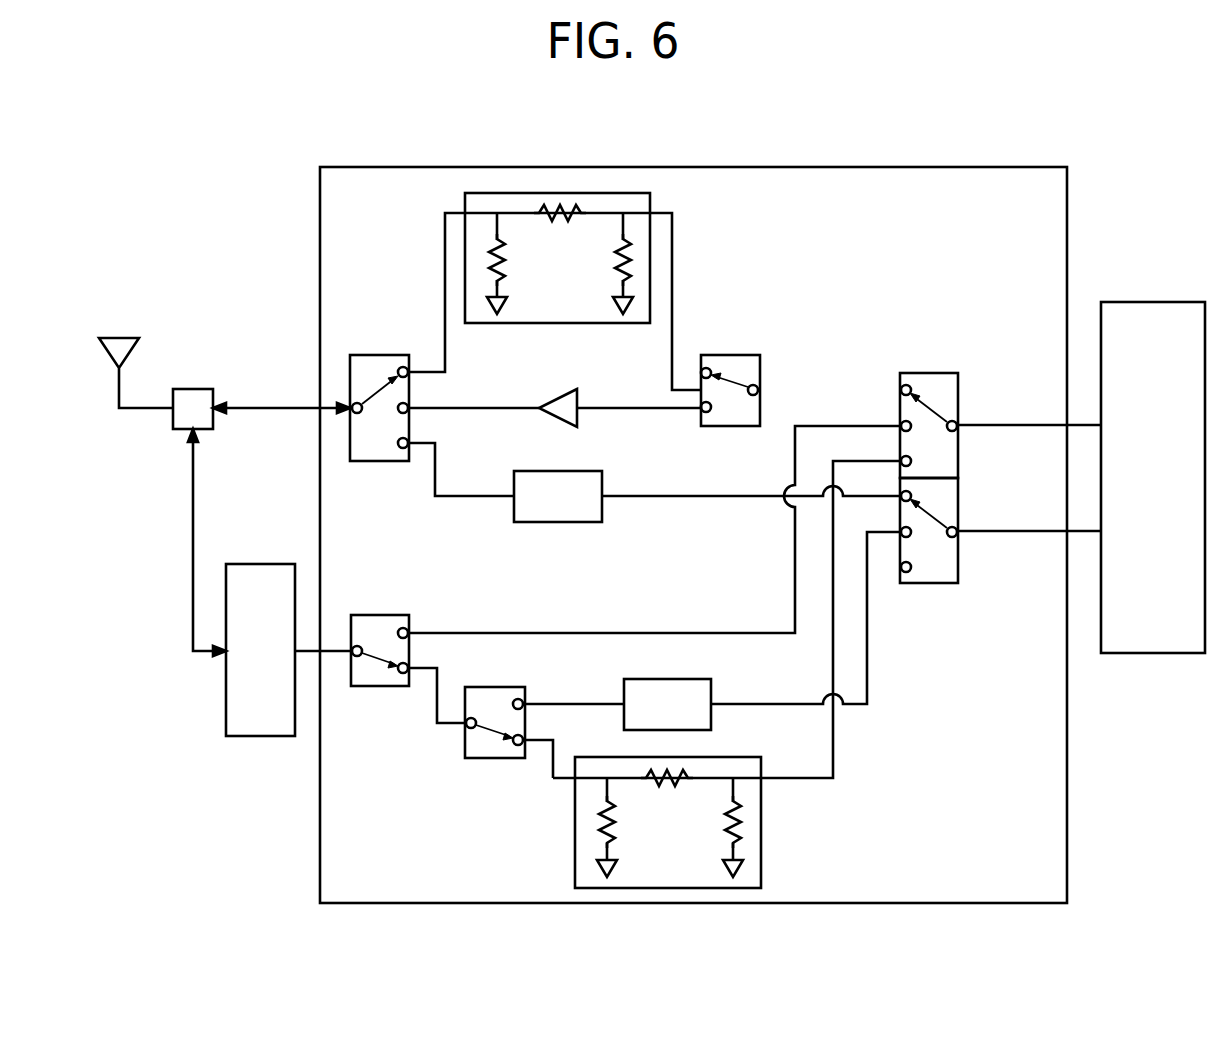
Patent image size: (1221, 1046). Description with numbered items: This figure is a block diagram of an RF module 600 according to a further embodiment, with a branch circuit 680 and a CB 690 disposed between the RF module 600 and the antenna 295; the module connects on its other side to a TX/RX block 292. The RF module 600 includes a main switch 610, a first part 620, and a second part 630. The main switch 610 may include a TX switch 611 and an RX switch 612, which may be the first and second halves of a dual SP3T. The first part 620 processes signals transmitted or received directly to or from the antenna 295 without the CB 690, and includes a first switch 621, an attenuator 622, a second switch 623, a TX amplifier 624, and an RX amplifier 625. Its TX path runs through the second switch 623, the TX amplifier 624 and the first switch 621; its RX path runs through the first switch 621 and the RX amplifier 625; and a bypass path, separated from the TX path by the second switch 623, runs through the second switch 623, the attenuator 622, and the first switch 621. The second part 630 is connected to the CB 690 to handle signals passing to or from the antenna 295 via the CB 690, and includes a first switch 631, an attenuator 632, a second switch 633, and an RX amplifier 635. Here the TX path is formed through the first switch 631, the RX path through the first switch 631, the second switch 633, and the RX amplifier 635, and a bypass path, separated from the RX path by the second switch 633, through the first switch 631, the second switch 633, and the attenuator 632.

The RF module 600 is at (893, 166).
The main switch 610 is at (968, 451).
The TX switch 611 is at (960, 390).
The RX switch 612 is at (960, 561).
The first part 620 is at (625, 353).
The first switch 621 is at (380, 354).
The attenuator 622 is at (651, 200).
The second switch 623 is at (729, 354).
The TX amplifier 624 is at (556, 389).
The RX amplifier 625 is at (603, 482).
The second part 630 is at (568, 711).
The first switch 631 is at (380, 614).
The attenuator 632 is at (574, 820).
The second switch 633 is at (464, 740).
The RX amplifier 635 is at (712, 690).
The branch circuit 680 is at (193, 388).
The CB 690 is at (260, 563).
The transceiver 292 is at (1151, 301).
The antenna 295 is at (119, 336).